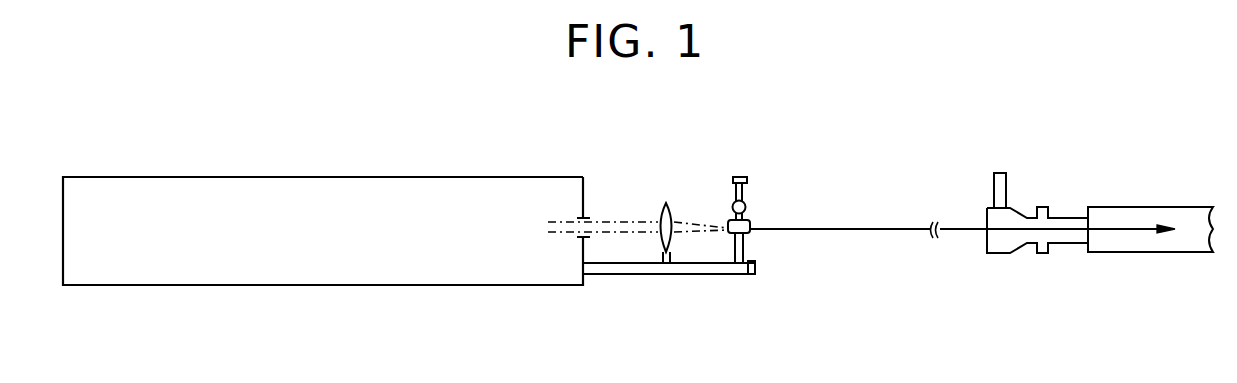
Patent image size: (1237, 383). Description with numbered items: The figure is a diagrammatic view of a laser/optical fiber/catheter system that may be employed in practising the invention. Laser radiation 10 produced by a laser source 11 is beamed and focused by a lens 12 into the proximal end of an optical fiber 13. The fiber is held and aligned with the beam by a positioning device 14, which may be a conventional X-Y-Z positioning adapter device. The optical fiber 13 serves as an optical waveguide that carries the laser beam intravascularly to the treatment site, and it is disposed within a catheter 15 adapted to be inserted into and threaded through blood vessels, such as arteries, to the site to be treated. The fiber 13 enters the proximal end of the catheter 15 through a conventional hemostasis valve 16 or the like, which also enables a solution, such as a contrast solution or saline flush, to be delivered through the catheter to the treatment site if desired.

The laser radiation 10 is at (612, 224).
The laser source 11 is at (320, 177).
The lens 12 is at (670, 210).
The optical fiber 13 is at (854, 229).
The positioning device 14 is at (748, 181).
The catheter 15 is at (1133, 207).
The hemostasis valve 16 is at (1000, 246).